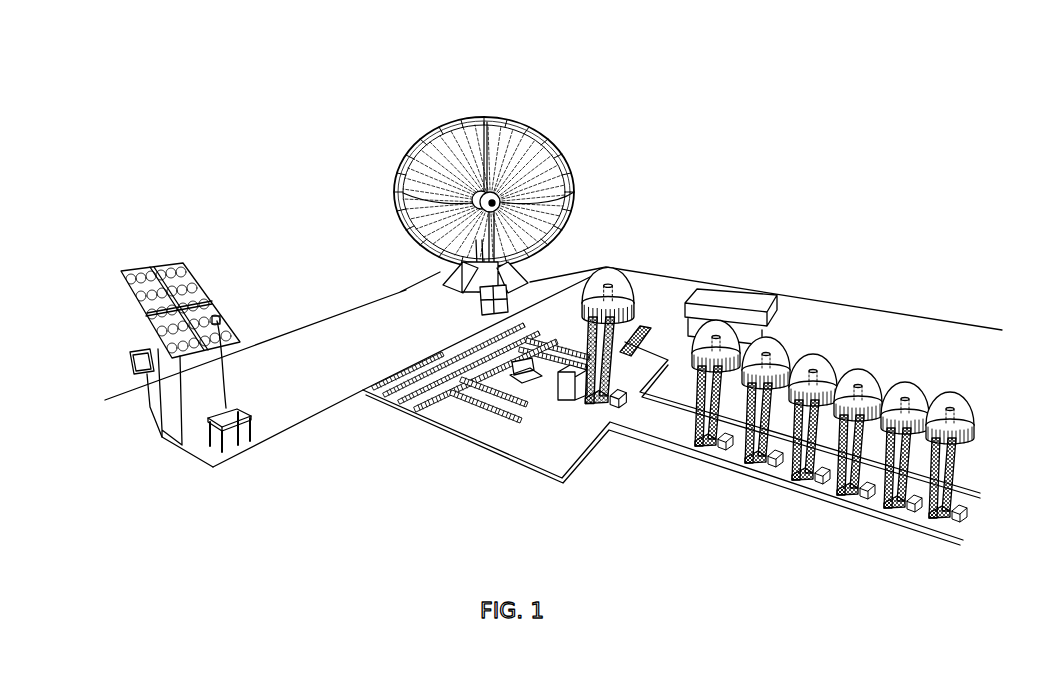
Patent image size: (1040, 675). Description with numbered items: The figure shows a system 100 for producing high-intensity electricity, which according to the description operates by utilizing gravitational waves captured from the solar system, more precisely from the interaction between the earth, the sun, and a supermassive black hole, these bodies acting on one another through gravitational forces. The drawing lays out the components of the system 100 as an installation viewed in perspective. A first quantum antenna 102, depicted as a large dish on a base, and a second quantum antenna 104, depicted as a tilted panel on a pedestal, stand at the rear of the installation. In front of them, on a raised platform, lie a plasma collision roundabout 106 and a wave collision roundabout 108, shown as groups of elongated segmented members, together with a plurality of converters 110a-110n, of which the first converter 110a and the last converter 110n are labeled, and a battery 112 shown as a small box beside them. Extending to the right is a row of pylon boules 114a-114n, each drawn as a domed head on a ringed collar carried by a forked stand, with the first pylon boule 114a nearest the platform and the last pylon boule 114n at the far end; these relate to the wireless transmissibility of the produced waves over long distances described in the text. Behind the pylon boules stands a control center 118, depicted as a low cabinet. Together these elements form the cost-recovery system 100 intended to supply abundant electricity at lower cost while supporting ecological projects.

The system 100 is at (205, 76).
The first quantum antenna 102 is at (575, 203).
The second quantum antenna 104 is at (218, 318).
The plasma collision roundabout 106 is at (398, 402).
The wave collision roundabout 108 is at (510, 418).
The converter 110a is at (375, 393).
The converter 110n is at (552, 334).
The battery 112 is at (567, 403).
The pylon boule 114a is at (628, 293).
The pylon boule 114n is at (972, 418).
The control center 118 is at (756, 306).